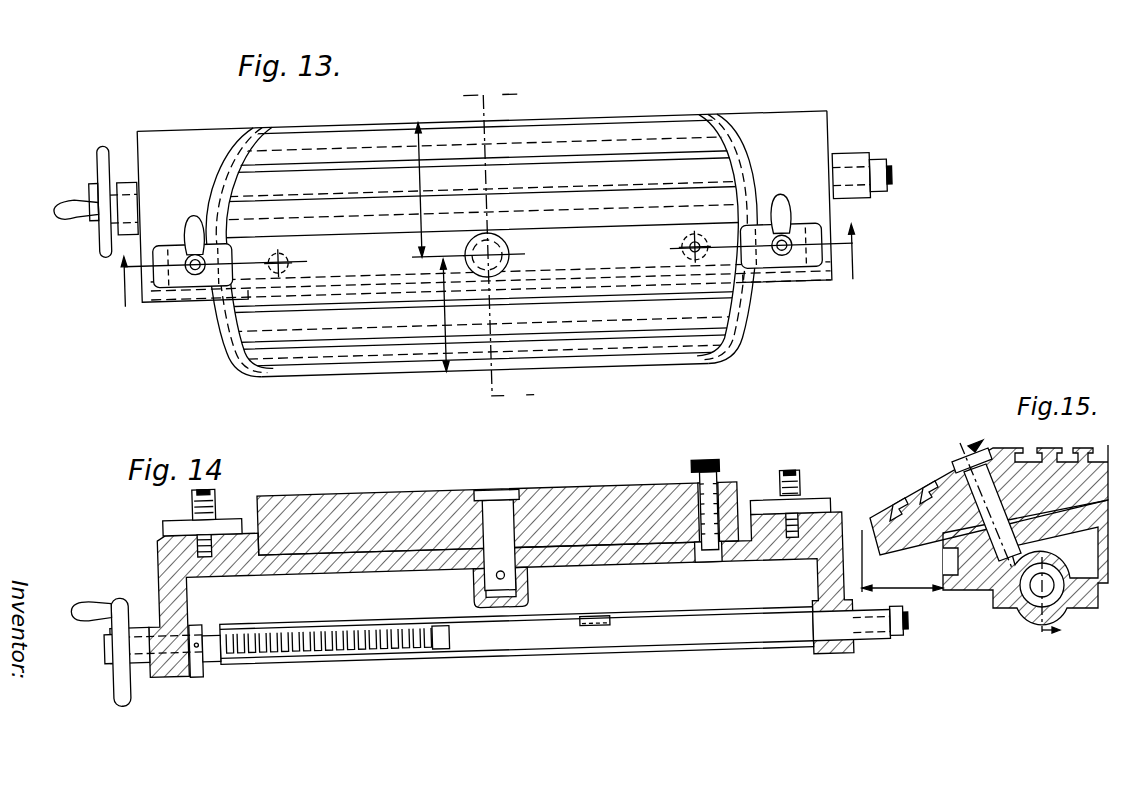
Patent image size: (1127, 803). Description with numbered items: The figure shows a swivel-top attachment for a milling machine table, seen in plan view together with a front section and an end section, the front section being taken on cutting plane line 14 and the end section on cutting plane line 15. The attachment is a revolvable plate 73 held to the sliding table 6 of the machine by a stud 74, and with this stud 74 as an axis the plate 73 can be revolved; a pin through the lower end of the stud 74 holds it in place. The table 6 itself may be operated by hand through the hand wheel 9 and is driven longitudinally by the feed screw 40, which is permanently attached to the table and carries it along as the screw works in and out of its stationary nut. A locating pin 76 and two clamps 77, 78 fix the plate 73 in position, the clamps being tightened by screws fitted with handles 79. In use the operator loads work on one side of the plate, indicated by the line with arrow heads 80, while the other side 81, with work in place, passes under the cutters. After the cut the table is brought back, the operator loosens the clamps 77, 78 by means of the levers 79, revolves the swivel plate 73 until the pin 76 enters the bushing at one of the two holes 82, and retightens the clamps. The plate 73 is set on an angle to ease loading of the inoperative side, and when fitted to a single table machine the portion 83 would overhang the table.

In FIG. 13, the table 6 is at (154, 123).
In FIG. 14, the table 6 is at (177, 666).
In FIG. 15, the table 6 is at (1108, 565).
In FIG. 13, the hand wheel 9 is at (105, 137).
In FIG. 14, the hand wheel 9 is at (119, 696).
In FIG. 13, the hand wheel 14 is at (488, 265).
In FIG. 15, the hand wheel 14 is at (1008, 543).
In FIG. 13, the cutting plane line 15— 15 is at (498, 246).
In FIG. 14, the screw 40 is at (486, 652).
In FIG. 14, the revolvable plate 73 is at (397, 489).
In FIG. 15, the revolvable plate 73 is at (903, 492).
In FIG. 13, the stud 74 is at (498, 235).
In FIG. 14, the stud 74 is at (505, 493).
In FIG. 13, the locating pin 76 is at (710, 262).
In FIG. 14, the locating pin 76 is at (695, 471).
In FIG. 13, the clamp 77 is at (171, 276).
In FIG. 14, the clamp 77 is at (164, 515).
In FIG. 13, the clamp 78 is at (758, 235).
In FIG. 14, the clamp 78 is at (815, 507).
In FIG. 13, the handles 79 is at (784, 206).
In FIG. 14, the handles 79 is at (150, 489).
In FIG. 13, the loading side line 80 is at (449, 317).
In FIG. 13, the working side 81 is at (422, 183).
In FIG. 13, the holes 82 is at (273, 262).
In FIG. 15, the overhanging portion 83 is at (902, 561).